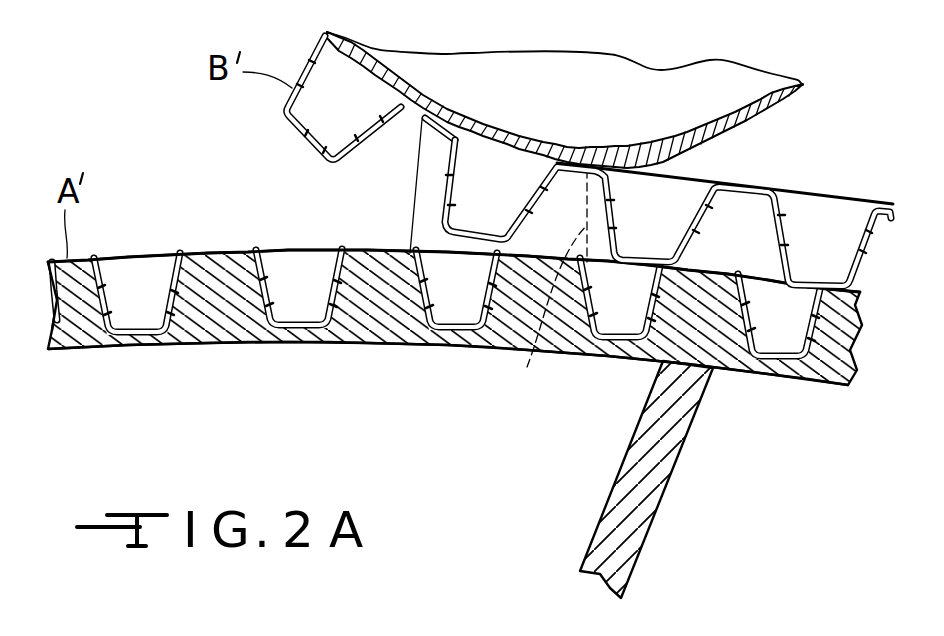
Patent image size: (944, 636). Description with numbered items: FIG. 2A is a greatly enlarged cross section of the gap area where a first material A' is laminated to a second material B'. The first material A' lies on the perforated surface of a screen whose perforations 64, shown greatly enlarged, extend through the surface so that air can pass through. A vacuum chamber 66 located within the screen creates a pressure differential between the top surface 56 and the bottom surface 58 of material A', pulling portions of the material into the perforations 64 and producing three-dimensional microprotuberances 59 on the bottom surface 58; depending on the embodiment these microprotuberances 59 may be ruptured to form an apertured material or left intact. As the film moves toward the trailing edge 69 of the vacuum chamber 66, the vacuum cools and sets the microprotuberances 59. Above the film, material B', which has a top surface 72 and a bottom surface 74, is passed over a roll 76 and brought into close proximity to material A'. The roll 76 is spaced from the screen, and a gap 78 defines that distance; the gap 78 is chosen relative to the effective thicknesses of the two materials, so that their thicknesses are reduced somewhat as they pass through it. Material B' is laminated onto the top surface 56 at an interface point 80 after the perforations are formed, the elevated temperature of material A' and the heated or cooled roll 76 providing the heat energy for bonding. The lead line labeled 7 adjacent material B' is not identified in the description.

The folded end channel 7 is at (300, 132).
The top surface 56 is at (80, 257).
The bottom surface 58 is at (65, 352).
The microprotuberances 59 is at (147, 347).
The perforations 64 is at (285, 344).
The vacuum chamber 66 is at (448, 391).
The trailing edge 69 is at (627, 446).
The top surface 72 is at (583, 160).
The bottom surface 74 is at (420, 126).
The roll 76 is at (433, 122).
The gap 78 is at (413, 187).
The interface point 80 is at (543, 285).